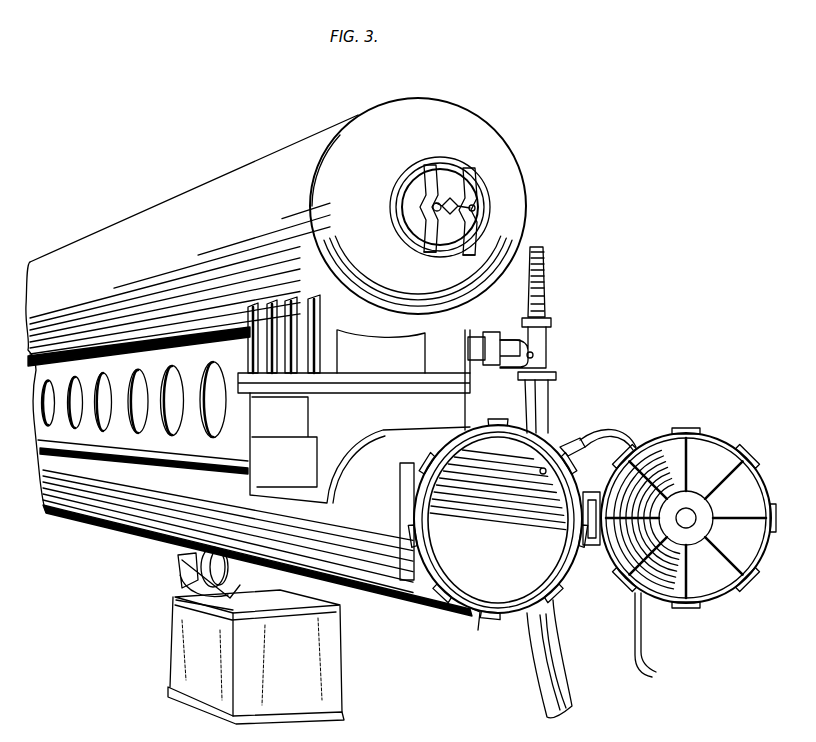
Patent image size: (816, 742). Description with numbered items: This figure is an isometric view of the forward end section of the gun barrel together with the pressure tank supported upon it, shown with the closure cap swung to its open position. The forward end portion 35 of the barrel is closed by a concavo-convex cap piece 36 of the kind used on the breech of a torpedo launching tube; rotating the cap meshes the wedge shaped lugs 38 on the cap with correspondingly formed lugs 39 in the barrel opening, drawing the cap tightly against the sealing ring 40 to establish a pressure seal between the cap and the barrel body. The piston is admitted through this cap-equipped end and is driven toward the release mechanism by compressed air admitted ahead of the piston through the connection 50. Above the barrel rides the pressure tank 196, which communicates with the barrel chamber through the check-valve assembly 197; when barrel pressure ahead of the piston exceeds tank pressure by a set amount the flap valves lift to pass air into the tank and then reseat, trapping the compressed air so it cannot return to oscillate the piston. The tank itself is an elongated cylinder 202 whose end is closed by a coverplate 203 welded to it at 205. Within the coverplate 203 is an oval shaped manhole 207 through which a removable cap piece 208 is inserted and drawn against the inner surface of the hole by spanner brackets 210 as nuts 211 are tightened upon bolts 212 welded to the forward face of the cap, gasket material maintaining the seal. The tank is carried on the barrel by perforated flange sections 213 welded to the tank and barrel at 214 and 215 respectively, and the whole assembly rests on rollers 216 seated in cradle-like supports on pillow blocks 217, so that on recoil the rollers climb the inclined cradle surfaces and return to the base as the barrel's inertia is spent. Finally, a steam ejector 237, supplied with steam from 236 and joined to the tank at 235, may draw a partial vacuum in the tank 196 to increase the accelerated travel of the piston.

The pressure tank 196 is at (147, 203).
The elongated cylinder 202 is at (208, 247).
The coverplate 203 is at (462, 120).
The weld 205 is at (358, 115).
The oval shaped manhole 207 is at (392, 217).
The removable cap piece 208 is at (445, 180).
The spanner brackets 210 is at (448, 256).
The nuts 211 is at (453, 199).
The bolts 212 is at (454, 220).
The weld 215 is at (96, 344).
The perforated flange sections 213 is at (152, 446).
The weld 214 is at (226, 474).
The check-valve assembly 197 is at (367, 416).
The tank connection 235 is at (482, 347).
The steam supply 236 is at (542, 266).
The steam ejector 237 is at (560, 377).
The connection 50 is at (592, 430).
The sealing ring 40 is at (500, 610).
The lugs 39 is at (520, 618).
The forward end portion of the barrel 35 is at (390, 596).
The concavo-convex cap piece 36 is at (716, 598).
The wedge shaped lugs 38 is at (622, 596).
The rollers 216 is at (200, 565).
The pillow blocks 217 is at (173, 655).